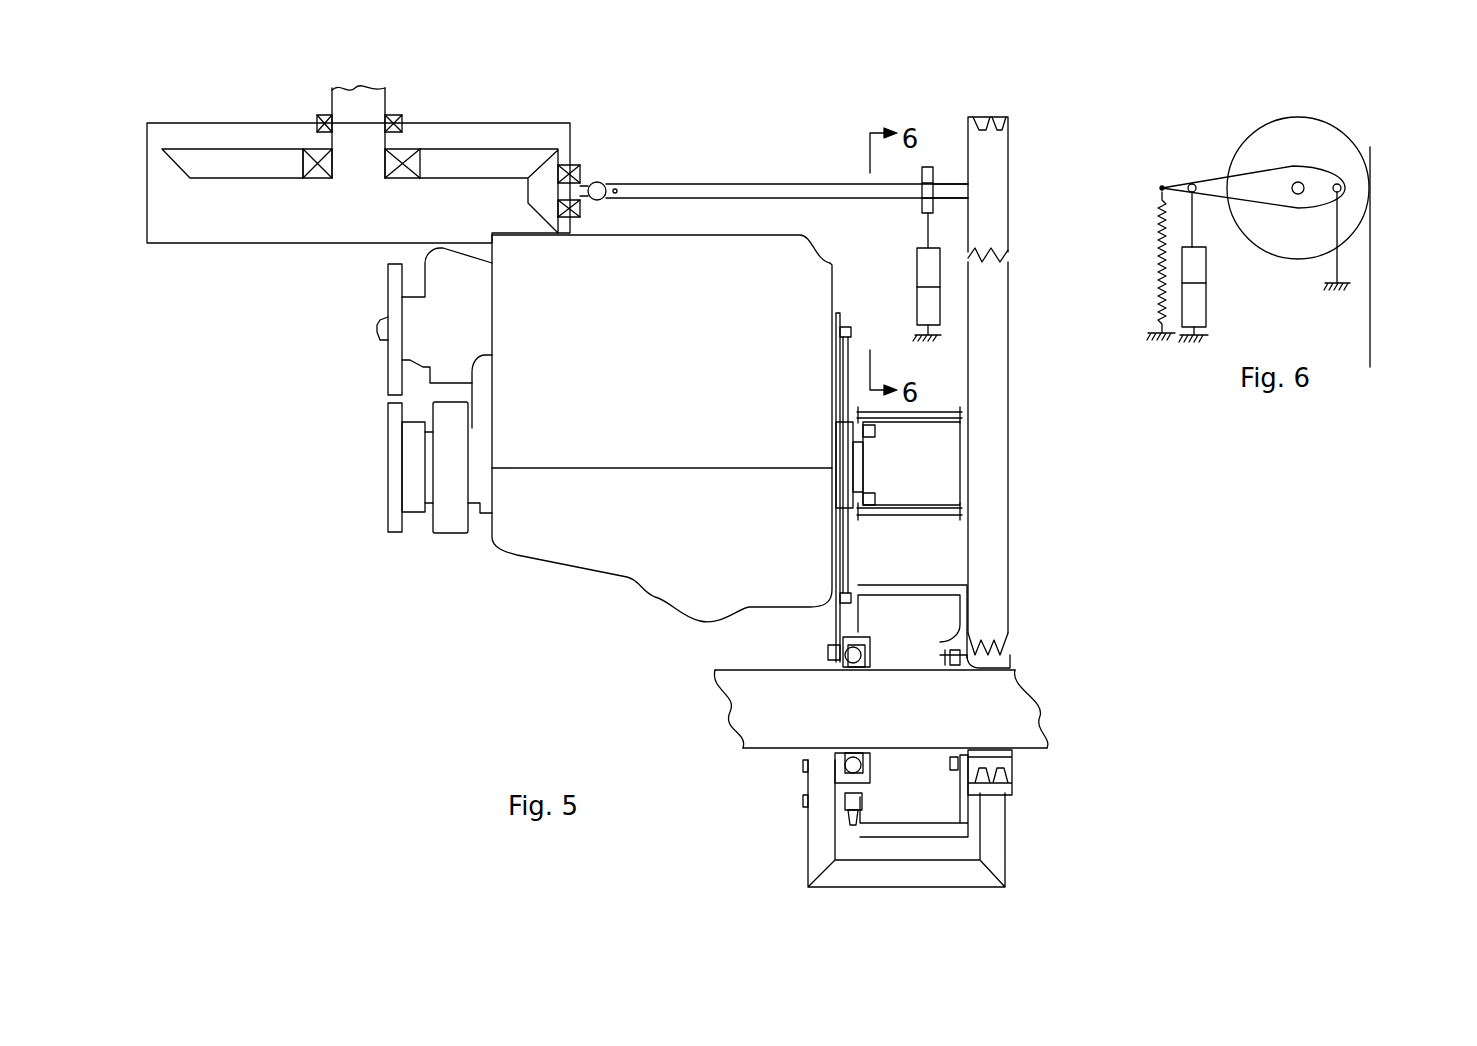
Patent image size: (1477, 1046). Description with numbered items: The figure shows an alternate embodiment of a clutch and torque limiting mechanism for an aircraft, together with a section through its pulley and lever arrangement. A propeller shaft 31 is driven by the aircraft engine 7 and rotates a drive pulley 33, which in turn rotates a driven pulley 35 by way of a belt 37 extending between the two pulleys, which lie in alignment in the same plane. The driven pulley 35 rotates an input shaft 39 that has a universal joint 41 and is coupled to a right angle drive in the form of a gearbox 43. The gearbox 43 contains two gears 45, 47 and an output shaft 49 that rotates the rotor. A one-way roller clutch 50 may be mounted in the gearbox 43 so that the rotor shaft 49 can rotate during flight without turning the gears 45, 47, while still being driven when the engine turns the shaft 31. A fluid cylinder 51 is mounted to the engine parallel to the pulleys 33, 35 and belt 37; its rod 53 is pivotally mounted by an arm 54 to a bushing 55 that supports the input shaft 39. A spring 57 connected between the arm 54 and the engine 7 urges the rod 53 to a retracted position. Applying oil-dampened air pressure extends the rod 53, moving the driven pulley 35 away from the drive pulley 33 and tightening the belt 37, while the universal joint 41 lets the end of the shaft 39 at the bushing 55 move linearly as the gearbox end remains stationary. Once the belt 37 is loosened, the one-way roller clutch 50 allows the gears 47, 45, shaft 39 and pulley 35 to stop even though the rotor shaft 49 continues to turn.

In FIG. 5, the aircraft engine 7 is at (627, 577).
In FIG. 5, the propeller shaft 31 is at (1030, 715).
In FIG. 5, the drive pulley 33 is at (1012, 645).
In FIG. 5, the driven pulley 35 is at (1010, 160).
In FIG. 6, the driven pulley 35 is at (1350, 185).
In FIG. 5, the belt 37 is at (1010, 305).
In FIG. 6, the belt 37 is at (1370, 305).
In FIG. 5, the input shaft 39 is at (952, 178).
In FIG. 6, the input shaft 39 is at (1305, 182).
In FIG. 5, the universal joint 41 is at (597, 180).
In FIG. 5, the gearbox 43 is at (315, 243).
In FIG. 5, the gear 45 is at (528, 193).
In FIG. 5, the gear 47 is at (288, 182).
In FIG. 5, the output shaft 49 is at (380, 103).
In FIG. 5, the one-way roller clutch 50 is at (410, 150).
In FIG. 5, the fluid cylinder 51 is at (917, 290).
In FIG. 6, the fluid cylinder 51 is at (1193, 307).
In FIG. 5, the rod 53 is at (928, 222).
In FIG. 6, the rod 53 is at (1195, 233).
In FIG. 6, the arm 54 is at (1218, 190).
In FIG. 6, the bushing 55 is at (1307, 182).
In FIG. 6, the spring 57 is at (1162, 247).